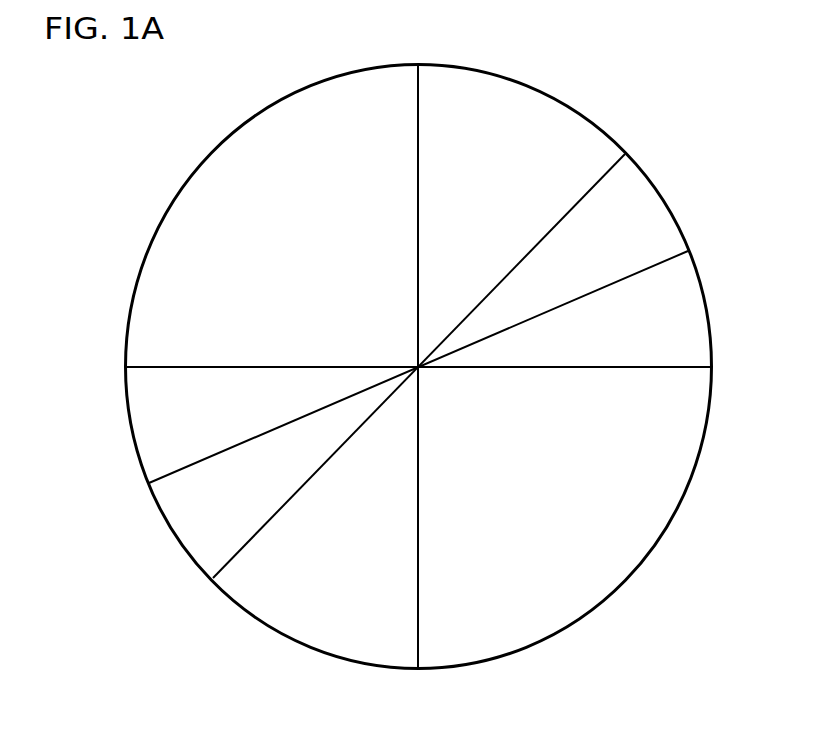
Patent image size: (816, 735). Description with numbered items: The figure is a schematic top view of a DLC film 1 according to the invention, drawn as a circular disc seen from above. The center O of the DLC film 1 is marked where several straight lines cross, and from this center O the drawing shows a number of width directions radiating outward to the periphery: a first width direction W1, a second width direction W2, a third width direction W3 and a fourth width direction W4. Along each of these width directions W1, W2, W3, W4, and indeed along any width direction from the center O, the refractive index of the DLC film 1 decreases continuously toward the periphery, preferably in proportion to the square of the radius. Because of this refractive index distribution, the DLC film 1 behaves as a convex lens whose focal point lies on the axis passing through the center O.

The DLC film 1 is at (623, 542).
The width direction W1 is at (419, 352).
The width direction W2 is at (397, 367).
The width direction W3 is at (419, 366).
The width direction W4 is at (418, 367).
The center O is at (396, 349).